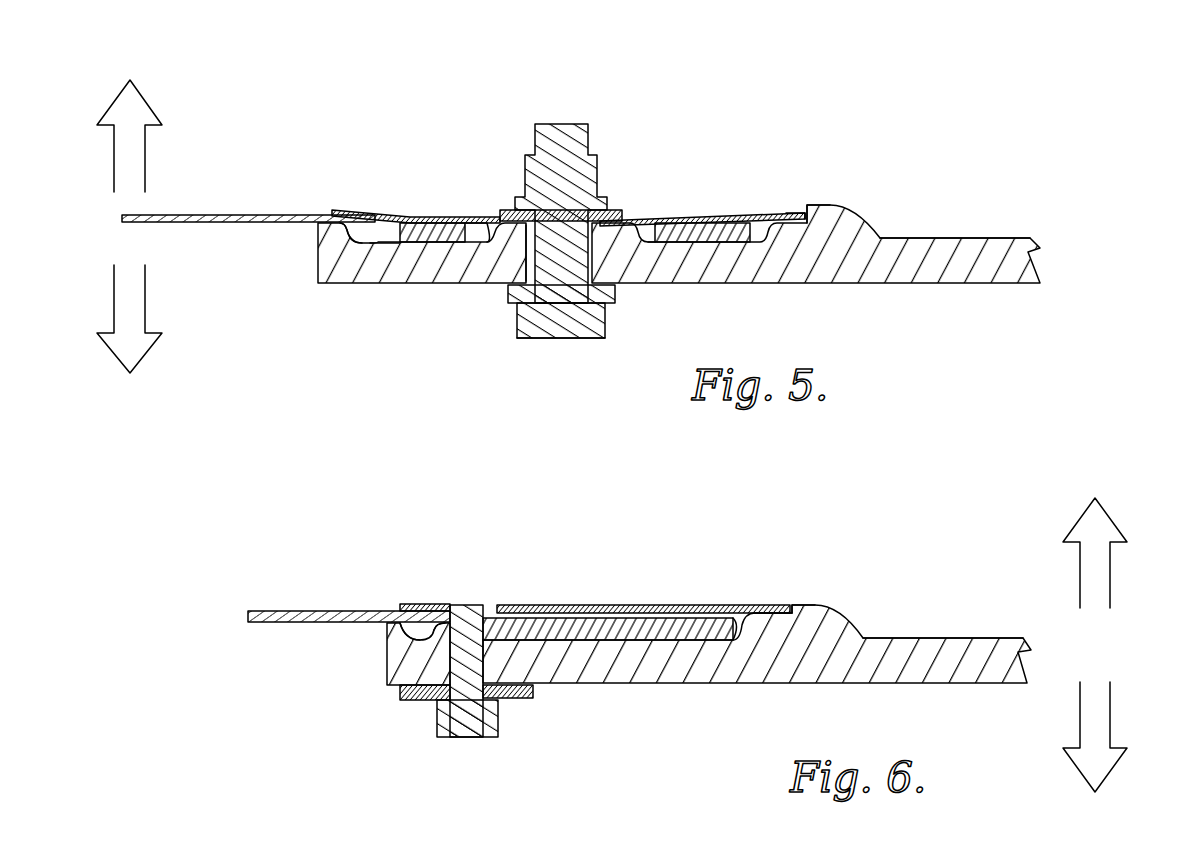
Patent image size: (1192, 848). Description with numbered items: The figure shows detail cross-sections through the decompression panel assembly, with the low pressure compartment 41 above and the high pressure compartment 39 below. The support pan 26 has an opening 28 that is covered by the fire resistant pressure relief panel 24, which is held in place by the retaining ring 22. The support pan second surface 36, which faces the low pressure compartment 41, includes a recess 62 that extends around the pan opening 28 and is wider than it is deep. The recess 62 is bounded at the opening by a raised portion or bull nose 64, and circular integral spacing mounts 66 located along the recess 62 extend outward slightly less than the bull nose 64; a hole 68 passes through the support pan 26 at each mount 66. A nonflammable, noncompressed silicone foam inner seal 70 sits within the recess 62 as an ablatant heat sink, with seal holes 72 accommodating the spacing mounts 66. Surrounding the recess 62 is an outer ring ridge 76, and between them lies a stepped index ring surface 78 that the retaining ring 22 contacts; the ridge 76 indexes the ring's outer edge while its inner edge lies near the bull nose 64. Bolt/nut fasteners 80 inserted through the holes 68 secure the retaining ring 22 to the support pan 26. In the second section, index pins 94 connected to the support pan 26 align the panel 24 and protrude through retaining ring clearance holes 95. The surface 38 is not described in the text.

In FIG. 5, the retaining ring 22 is at (348, 211).
In FIG. 6, the retaining ring 22 is at (409, 604).
In FIG. 5, the fire resistant pressure relief panel 24 is at (234, 214).
In FIG. 6, the fire resistant pressure relief panel 24 is at (292, 610).
In FIG. 5, the support pan 26 is at (806, 258).
In FIG. 6, the support pan 26 is at (801, 680).
In FIG. 5, the opening 28 is at (318, 262).
In FIG. 6, the opening 28 is at (388, 672).
In FIG. 6, the support pan second surface 36 is at (961, 638).
In FIG. 5, the body surface 38 is at (1006, 238).
In FIG. 5, the high pressure compartment 39 is at (139, 350).
In FIG. 6, the high pressure compartment 39 is at (1105, 765).
In FIG. 5, the low pressure compartment 41 is at (136, 107).
In FIG. 6, the low pressure compartment 41 is at (1103, 525).
In FIG. 5, the recess 62 is at (373, 244).
In FIG. 6, the recess 62 is at (434, 622).
In FIG. 5, the raised portion (bull nose) 64 is at (326, 231).
In FIG. 6, the raised portion (bull nose) 64 is at (389, 627).
In FIG. 5, the integral spacing mount 66 is at (493, 245).
In FIG. 5, the hole 68 is at (560, 302).
In FIG. 5, the inner seal 70 is at (431, 226).
In FIG. 6, the inner seal 70 is at (641, 630).
In FIG. 5, the seal hole 72 is at (481, 222).
In FIG. 5, the outer ring ridge 76 is at (816, 205).
In FIG. 6, the outer ring ridge 76 is at (797, 605).
In FIG. 5, the stepped index ring surface 78 is at (786, 216).
In FIG. 6, the stepped index ring surface 78 is at (763, 612).
In FIG. 5, the fastener 80 is at (535, 341).
In FIG. 6, the index pin 94 is at (461, 605).
In FIG. 6, the retaining ring clearance hole 95 is at (491, 605).